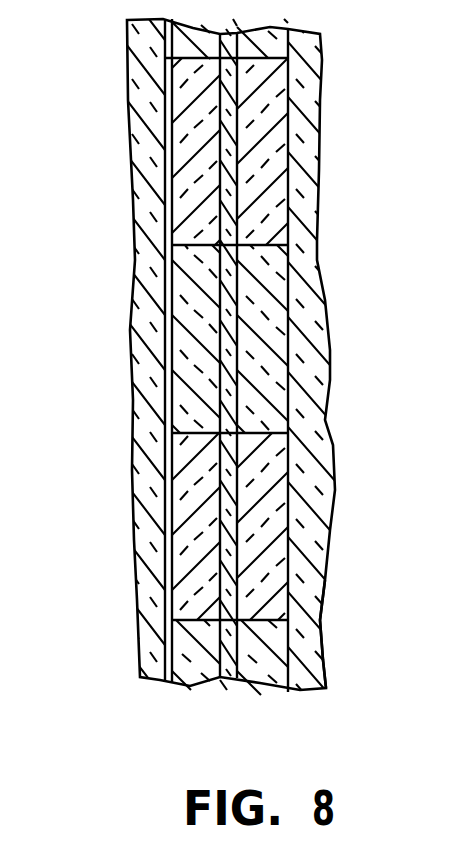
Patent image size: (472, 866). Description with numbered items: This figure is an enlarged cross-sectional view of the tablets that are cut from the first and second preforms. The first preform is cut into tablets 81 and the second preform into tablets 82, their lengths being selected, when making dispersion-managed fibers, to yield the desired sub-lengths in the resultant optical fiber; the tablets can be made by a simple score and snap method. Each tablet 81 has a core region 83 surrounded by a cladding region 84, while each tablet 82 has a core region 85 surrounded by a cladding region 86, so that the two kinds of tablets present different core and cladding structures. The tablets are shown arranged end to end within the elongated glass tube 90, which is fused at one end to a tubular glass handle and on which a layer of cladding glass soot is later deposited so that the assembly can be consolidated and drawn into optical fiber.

The tablet 81 is at (296, 380).
The tablet 82 is at (296, 91).
The core region 83 is at (227, 317).
The cladding region 84 is at (187, 377).
The core region 85 is at (228, 175).
The cladding region 86 is at (280, 188).
The glass tube 90 is at (313, 613).